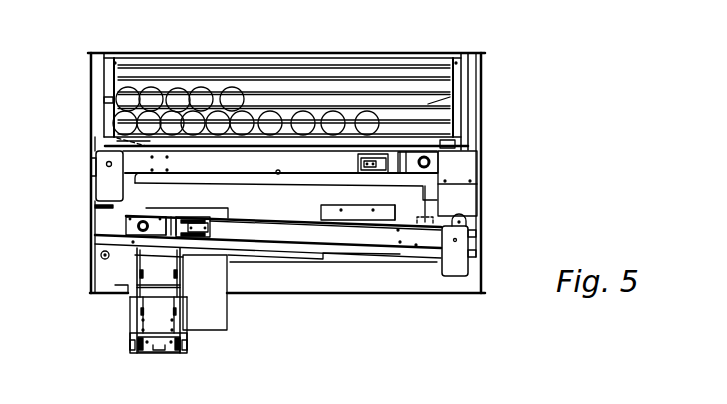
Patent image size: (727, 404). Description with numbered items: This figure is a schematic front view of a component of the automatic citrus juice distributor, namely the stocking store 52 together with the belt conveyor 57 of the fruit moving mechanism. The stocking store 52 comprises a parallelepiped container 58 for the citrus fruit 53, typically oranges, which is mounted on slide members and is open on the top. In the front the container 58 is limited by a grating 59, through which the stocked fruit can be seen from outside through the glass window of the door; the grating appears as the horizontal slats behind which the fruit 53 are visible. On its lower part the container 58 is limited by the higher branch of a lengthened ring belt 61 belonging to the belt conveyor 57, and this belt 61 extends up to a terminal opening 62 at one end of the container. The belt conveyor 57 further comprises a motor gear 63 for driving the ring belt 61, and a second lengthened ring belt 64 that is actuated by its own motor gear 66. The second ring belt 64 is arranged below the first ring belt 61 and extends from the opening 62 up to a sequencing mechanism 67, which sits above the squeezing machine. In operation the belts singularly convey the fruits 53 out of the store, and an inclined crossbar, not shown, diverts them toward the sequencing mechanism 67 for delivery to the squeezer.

The stocking store 52 is at (545, 128).
The citrus fruit 53 is at (190, 93).
The belt conveyor 57 is at (76, 177).
The parallelepiped container 58 is at (480, 53).
The grating 59 is at (323, 80).
The lengthened ring belt 61 is at (116, 137).
The terminal opening 62 is at (452, 140).
The motor gear 63 is at (92, 194).
The second lengthened ring belt 64 is at (420, 222).
The motor gear 66 is at (468, 270).
The sequencing mechanism 67 is at (227, 347).